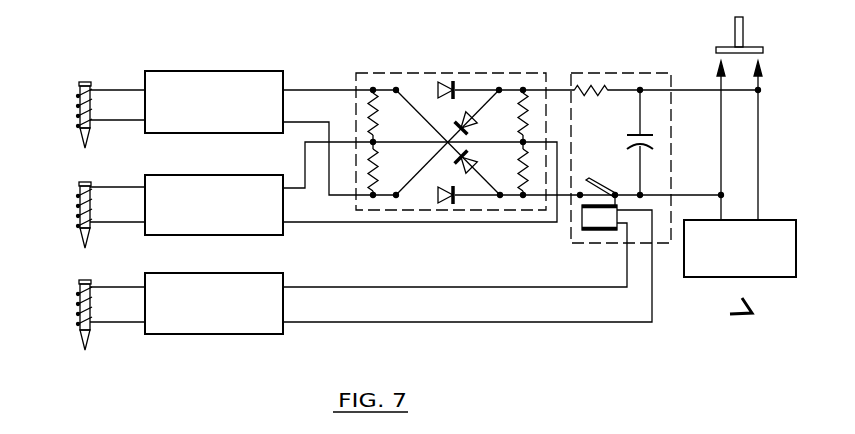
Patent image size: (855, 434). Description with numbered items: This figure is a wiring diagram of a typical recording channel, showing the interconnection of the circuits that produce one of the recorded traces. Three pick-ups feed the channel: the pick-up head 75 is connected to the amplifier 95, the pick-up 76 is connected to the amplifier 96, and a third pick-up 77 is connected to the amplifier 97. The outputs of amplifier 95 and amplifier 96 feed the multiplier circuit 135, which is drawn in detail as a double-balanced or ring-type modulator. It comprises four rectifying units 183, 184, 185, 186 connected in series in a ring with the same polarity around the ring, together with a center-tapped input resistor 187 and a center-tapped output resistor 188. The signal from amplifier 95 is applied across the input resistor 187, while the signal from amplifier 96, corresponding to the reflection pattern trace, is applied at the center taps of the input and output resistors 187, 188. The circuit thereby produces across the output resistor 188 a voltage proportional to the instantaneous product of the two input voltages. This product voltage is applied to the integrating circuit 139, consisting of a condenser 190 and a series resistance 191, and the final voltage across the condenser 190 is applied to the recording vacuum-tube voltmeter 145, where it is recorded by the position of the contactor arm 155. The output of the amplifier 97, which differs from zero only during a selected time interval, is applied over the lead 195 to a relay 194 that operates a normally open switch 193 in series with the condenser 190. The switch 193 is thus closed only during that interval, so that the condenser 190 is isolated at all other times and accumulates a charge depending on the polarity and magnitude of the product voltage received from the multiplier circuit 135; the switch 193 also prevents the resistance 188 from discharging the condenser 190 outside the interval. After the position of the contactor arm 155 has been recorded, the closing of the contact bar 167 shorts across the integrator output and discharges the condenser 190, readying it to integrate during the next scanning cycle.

The pick-up head 75 is at (76, 95).
The pick-up 76 is at (76, 198).
The pick-up 77 is at (77, 296).
The amplifier 95 is at (200, 78).
The amplifier 96 is at (188, 182).
The amplifier 97 is at (187, 279).
The multiplier circuit 135 is at (387, 71).
The integrating circuit 139 is at (607, 72).
The rectifying unit 183 is at (440, 83).
The rectifying unit 184 is at (468, 116).
The rectifying unit 185 is at (447, 201).
The rectifying unit 186 is at (470, 176).
The input resistor 187 is at (370, 112).
The output resistor 188 is at (527, 105).
The condenser 190 is at (628, 143).
The series resistance 191 is at (604, 99).
The switch 193 is at (610, 187).
The relay 194 is at (593, 232).
The lead 195 is at (517, 288).
The contact bar 167 is at (743, 43).
The contactor arm 155 is at (743, 298).
The recording vacuum-tube voltmeter 145 is at (742, 267).